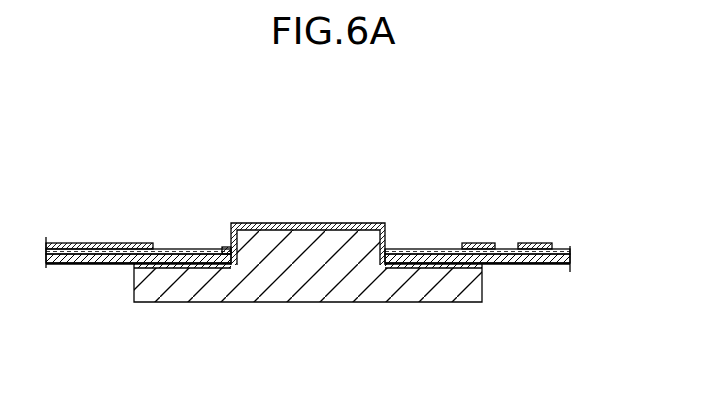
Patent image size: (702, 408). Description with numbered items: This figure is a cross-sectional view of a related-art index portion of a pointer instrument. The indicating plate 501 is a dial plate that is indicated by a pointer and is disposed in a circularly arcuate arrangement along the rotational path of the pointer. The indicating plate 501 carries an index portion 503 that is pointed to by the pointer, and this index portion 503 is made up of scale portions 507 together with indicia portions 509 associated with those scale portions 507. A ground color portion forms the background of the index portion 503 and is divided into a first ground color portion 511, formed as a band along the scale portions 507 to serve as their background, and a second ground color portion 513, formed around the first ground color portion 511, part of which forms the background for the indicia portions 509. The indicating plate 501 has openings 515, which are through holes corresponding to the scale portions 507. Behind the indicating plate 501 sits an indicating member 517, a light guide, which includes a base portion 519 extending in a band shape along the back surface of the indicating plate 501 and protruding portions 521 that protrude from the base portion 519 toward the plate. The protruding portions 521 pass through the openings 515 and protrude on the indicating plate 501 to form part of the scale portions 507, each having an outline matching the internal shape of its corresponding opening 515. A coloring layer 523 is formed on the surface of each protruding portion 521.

The indicating plate 501 is at (81, 266).
The index portion 503 is at (319, 178).
The scale portion 507 is at (323, 223).
The indicia portion 509 is at (505, 248).
The first ground color portion 511 is at (208, 247).
The second ground color portion 513 is at (120, 243).
The opening 515 is at (372, 263).
The indicating member 517 is at (482, 302).
The base portion 519 is at (436, 288).
The protruding portion 521 is at (365, 242).
The coloring layer 523 is at (280, 222).